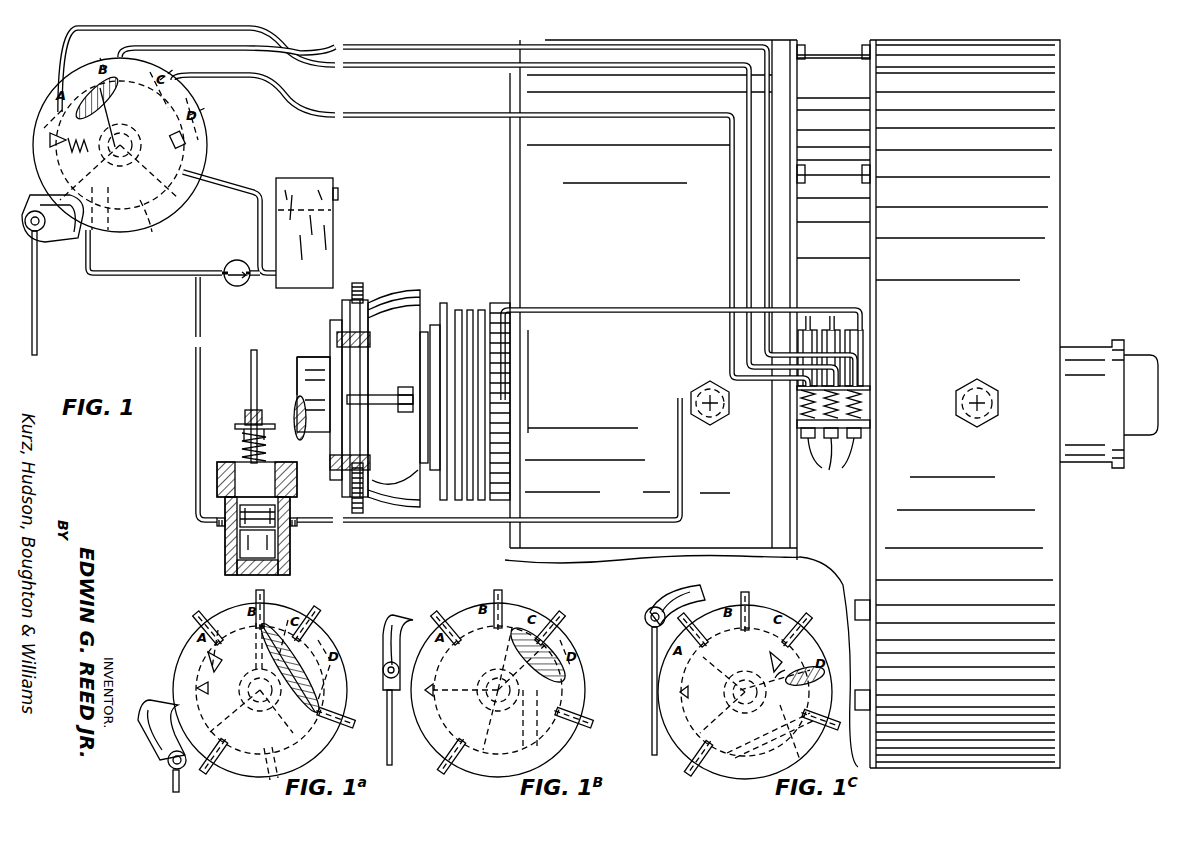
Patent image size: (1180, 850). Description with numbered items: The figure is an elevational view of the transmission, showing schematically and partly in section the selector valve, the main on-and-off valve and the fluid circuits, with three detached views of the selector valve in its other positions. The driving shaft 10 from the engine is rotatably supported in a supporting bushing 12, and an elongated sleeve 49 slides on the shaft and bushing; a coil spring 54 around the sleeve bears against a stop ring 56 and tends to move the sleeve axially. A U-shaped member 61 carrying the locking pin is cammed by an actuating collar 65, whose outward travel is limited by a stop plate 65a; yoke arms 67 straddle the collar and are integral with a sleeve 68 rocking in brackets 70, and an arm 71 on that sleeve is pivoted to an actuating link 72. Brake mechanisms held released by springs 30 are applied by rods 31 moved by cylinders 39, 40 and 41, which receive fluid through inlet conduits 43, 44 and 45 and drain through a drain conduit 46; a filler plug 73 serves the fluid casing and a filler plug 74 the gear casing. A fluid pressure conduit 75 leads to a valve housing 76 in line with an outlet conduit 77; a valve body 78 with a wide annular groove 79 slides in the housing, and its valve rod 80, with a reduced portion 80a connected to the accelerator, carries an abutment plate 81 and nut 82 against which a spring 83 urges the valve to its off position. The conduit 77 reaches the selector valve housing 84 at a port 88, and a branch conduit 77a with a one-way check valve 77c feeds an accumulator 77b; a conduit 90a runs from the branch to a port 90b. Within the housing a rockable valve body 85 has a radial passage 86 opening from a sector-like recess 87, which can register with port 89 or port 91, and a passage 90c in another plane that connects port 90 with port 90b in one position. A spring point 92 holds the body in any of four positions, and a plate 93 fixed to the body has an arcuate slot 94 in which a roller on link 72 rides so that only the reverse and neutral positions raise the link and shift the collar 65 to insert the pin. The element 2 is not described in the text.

In FIG. 1, the shaft / direction arrow 2 is at (1133, 405).
In FIG. 1, the driving shaft 10 is at (286, 432).
In FIG. 1, the supporting bushing 12 is at (306, 357).
In FIG. 1, the spring 30 is at (800, 405).
In FIG. 1, the rod 31 is at (831, 450).
In FIG. 1, the cylinder 39 is at (860, 342).
In FIG. 1, the cylinder 40 is at (835, 318).
In FIG. 1, the cylinder 41 is at (816, 316).
In FIG. 1, the inlet conduit 43 is at (382, 45).
In FIG. 1A, the inlet conduit 43 is at (324, 613).
In FIG. 1B, the inlet conduit 43 is at (572, 610).
In FIG. 1C, the inlet conduit 43 is at (802, 614).
In FIG. 1, the inlet conduit 44 is at (381, 68).
In FIG. 1A, the inlet conduit 44 is at (198, 612).
In FIG. 1B, the inlet conduit 44 is at (440, 612).
In FIG. 1, the inlet conduit 45 is at (381, 118).
In FIG. 1A, the inlet conduit 45 is at (265, 595).
In FIG. 1B, the inlet conduit 45 is at (503, 594).
In FIG. 1, the drain conduit 46 is at (632, 313).
In FIG. 1, the elongated sleeve 49 is at (433, 300).
In FIG. 1, the coil spring 54 is at (474, 308).
In FIG. 1, the stop ring 56 is at (446, 305).
In FIG. 1, the U-shaped member 61 is at (418, 470).
In FIG. 1, the actuating collar 65 is at (393, 300).
In FIG. 1, the stop plate 65a is at (336, 340).
In FIG. 1, the yoke arms 67 is at (363, 288).
In FIG. 1, the sleeve 68 is at (362, 370).
In FIG. 1, the brackets 70 is at (335, 322).
In FIG. 1, the arm 71 is at (380, 404).
In FIG. 1, the actuating link 72 is at (37, 313).
In FIG. 1A, the actuating link 72 is at (172, 790).
In FIG. 1B, the actuating link 72 is at (393, 762).
In FIG. 1C, the actuating link 72 is at (654, 712).
In FIG. 1, the filler plug 73 is at (712, 420).
In FIG. 1, the filler plug 74 is at (977, 420).
In FIG. 1, the fluid pressure conduit 75 is at (620, 506).
In FIG. 1, the valve housing 76 is at (297, 548).
In FIG. 1, the outlet conduit 77 is at (110, 276).
In FIG. 1A, the outlet conduit 77 is at (200, 776).
In FIG. 1B, the outlet conduit 77 is at (455, 770).
In FIG. 1C, the outlet conduit 77 is at (700, 770).
In FIG. 1, the branch conduit 77a is at (208, 280).
In FIG. 1, the accumulator 77b is at (325, 258).
In FIG. 1, the one-way check valve 77c is at (233, 262).
In FIG. 1, the valve body 78 is at (232, 553).
In FIG. 1, the annular groove 79 is at (236, 532).
In FIG. 1, the valve rod 80 is at (240, 453).
In FIG. 1, the reduced portion 80a is at (251, 385).
In FIG. 1, the abutment plate 81 is at (266, 424).
In FIG. 1, the nut 82 is at (245, 415).
In FIG. 1, the spring 83 is at (242, 440).
In FIG. 1, the selector valve housing 84 is at (180, 202).
In FIG. 1A, the selector valve housing 84 is at (318, 745).
In FIG. 1, the valve body 85 is at (175, 162).
In FIG. 1, the radial passage 86 is at (66, 120).
In FIG. 1A, the radial passage 86 is at (276, 668).
In FIG. 1B, the radial passage 86 is at (535, 655).
In FIG. 1C, the radial passage 86 is at (798, 669).
In FIG. 1, the sector-like recess 87 is at (158, 225).
In FIG. 1A, the sector-like recess 87 is at (262, 770).
In FIG. 1, the port 88 is at (115, 219).
In FIG. 1, the port 89 is at (110, 45).
In FIG. 1A, the port 89 is at (218, 625).
In FIG. 1, the port 90 is at (140, 58).
In FIG. 1A, the port 90 is at (278, 620).
In FIG. 1, the conduit 90a is at (222, 182).
In FIG. 1A, the conduit 90a is at (346, 722).
In FIG. 1B, the conduit 90a is at (586, 728).
In FIG. 1, the port 90b is at (188, 172).
In FIG. 1, the passage 90c is at (196, 130).
In FIG. 1A, the passage 90c is at (336, 672).
In FIG. 1B, the passage 90c is at (514, 720).
In FIG. 1C, the passage 90c is at (780, 732).
In FIG. 1, the port 91 is at (178, 85).
In FIG. 1A, the port 91 is at (328, 641).
In FIG. 1B, the port 91 is at (562, 642).
In FIG. 1, the spring point 92 is at (52, 163).
In FIG. 1A, the spring point 92 is at (245, 678).
In FIG. 1B, the spring point 92 is at (485, 697).
In FIG. 1C, the spring point 92 is at (747, 699).
In FIG. 1, the plate 93 is at (72, 228).
In FIG. 1A, the plate 93 is at (150, 705).
In FIG. 1B, the plate 93 is at (420, 622).
In FIG. 1C, the plate 93 is at (745, 600).
In FIG. 1, the arcuate slot 94 is at (28, 210).
In FIG. 1A, the arcuate slot 94 is at (158, 706).
In FIG. 1B, the arcuate slot 94 is at (405, 625).
In FIG. 1C, the arcuate slot 94 is at (705, 592).